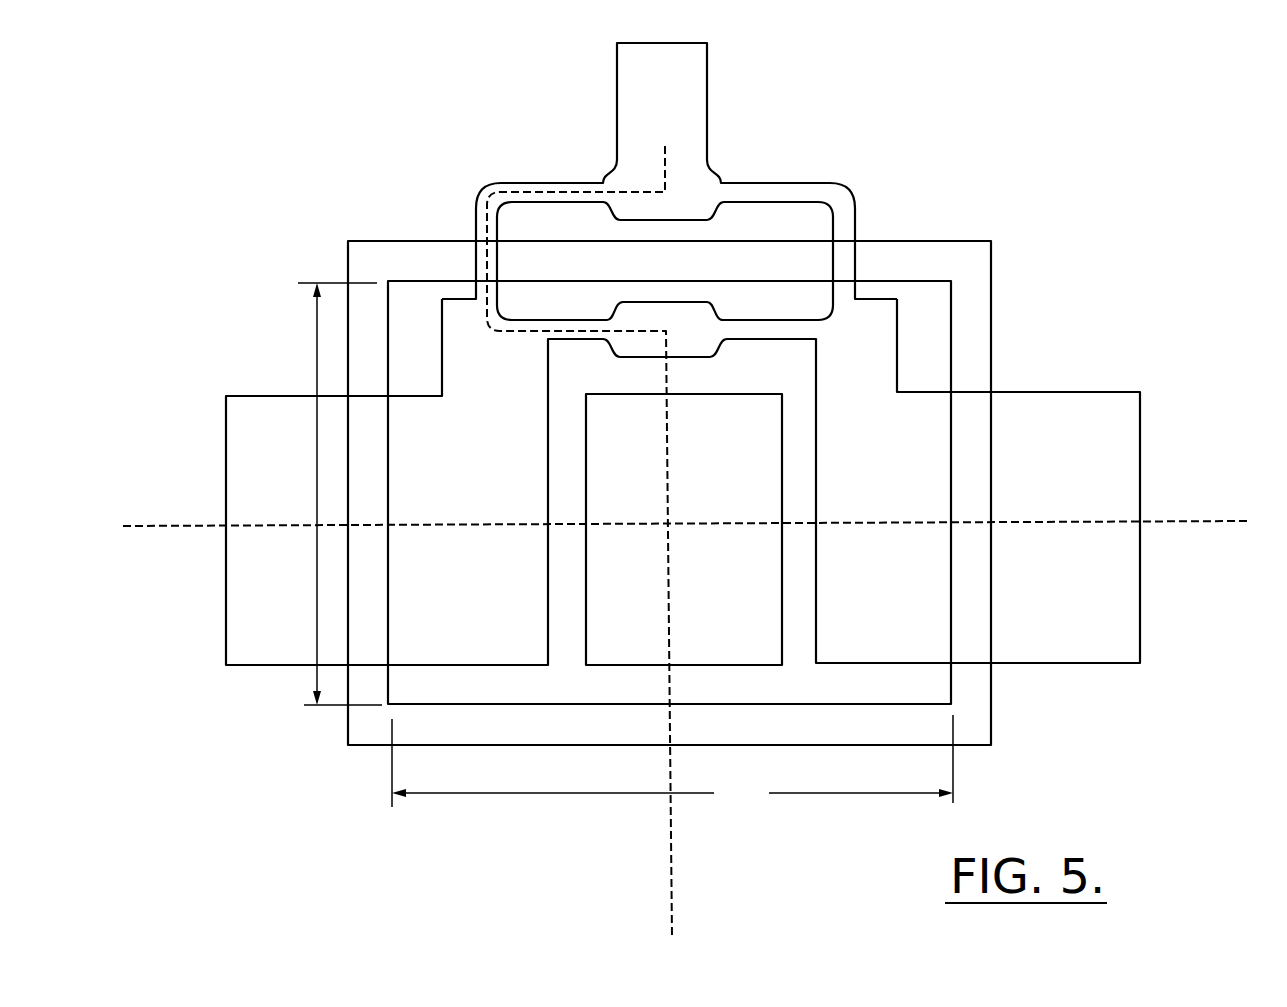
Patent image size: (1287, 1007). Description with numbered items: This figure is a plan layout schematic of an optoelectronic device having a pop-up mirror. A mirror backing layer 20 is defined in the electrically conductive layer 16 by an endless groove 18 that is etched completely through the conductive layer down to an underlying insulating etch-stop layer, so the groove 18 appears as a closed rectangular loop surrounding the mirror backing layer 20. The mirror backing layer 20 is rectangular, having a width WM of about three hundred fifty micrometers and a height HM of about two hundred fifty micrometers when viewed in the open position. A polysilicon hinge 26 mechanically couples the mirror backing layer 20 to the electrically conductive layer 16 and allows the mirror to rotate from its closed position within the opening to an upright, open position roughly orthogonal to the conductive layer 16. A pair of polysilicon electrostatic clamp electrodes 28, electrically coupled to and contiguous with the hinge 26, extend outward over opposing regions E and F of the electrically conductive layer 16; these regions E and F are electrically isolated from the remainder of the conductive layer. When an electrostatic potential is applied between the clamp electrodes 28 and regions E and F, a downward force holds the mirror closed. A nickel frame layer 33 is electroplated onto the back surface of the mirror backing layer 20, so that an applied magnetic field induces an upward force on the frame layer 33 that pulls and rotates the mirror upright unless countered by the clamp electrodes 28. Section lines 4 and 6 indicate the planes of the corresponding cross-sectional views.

The electrically conductive layer 16 is at (1180, 782).
The endless groove 18 is at (930, 255).
The mirror backing layer 20 is at (938, 327).
The polysilicon hinge 26 is at (796, 182).
The polysilicon electrostatic clamp electrodes 28 is at (268, 435).
The nickel frame layer 33 is at (763, 432).
The section line 6-6' 6 is at (665, 146).
The section line 4-4' 4 is at (123, 526).
The height of the mirror backing layer HM is at (339, 494).
The width of the mirror backing layer WM is at (672, 763).
The region E is at (256, 695).
The region F is at (1089, 694).